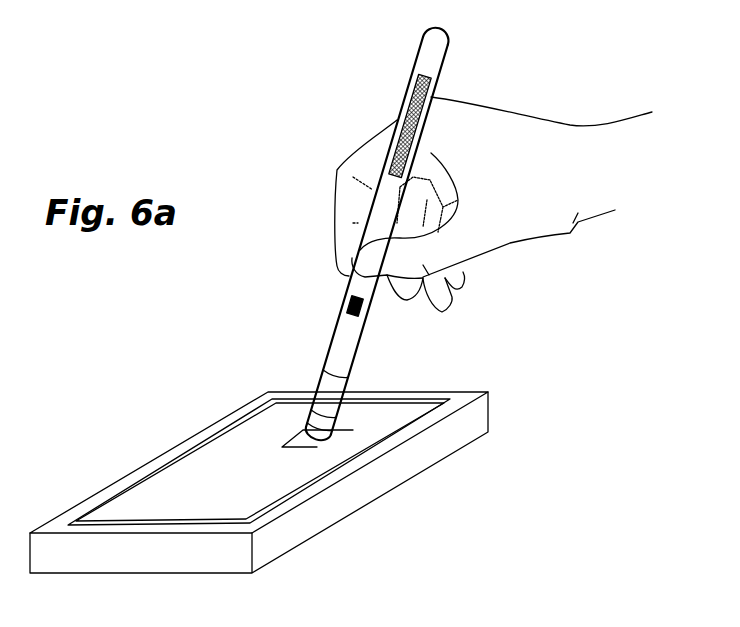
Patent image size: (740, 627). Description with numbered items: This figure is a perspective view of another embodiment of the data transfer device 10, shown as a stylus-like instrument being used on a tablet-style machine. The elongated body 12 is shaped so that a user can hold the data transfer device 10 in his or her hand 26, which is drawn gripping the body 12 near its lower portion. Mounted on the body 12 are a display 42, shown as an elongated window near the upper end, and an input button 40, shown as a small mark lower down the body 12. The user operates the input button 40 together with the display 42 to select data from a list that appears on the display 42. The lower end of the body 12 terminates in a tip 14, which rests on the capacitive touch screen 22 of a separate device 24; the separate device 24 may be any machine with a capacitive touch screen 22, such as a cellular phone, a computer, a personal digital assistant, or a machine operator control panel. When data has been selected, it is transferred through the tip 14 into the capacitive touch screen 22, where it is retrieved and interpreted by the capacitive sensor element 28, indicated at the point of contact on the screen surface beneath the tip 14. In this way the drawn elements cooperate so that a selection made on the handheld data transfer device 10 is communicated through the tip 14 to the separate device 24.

The data transfer device 10 is at (342, 261).
The body 12 is at (362, 335).
The tip 14 is at (315, 434).
The capacitive touch screen 22 is at (173, 485).
The separate device 24 is at (408, 467).
The hand 26 is at (510, 113).
The capacitive sensor element 28 is at (303, 436).
The input button 40 is at (345, 299).
The display 42 is at (413, 108).